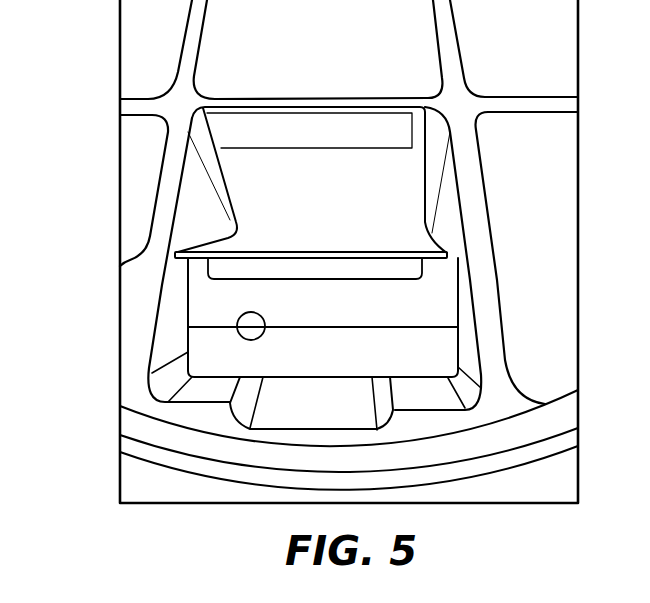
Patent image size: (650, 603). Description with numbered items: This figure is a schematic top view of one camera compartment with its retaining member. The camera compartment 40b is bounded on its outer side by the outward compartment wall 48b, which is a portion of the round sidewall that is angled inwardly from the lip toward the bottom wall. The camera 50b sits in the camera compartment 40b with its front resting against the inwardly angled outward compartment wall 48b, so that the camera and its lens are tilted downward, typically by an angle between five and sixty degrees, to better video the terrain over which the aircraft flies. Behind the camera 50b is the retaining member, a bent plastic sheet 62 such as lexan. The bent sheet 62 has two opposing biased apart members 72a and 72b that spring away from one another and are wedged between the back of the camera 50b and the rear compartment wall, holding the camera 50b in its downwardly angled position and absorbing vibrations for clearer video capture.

The bent sheet 62 is at (390, 158).
The biased apart member 72b is at (273, 160).
The biased apart member 72a is at (250, 247).
The camera compartment 40b is at (438, 216).
The camera 50b is at (373, 302).
The outward compartment wall 48b is at (208, 399).